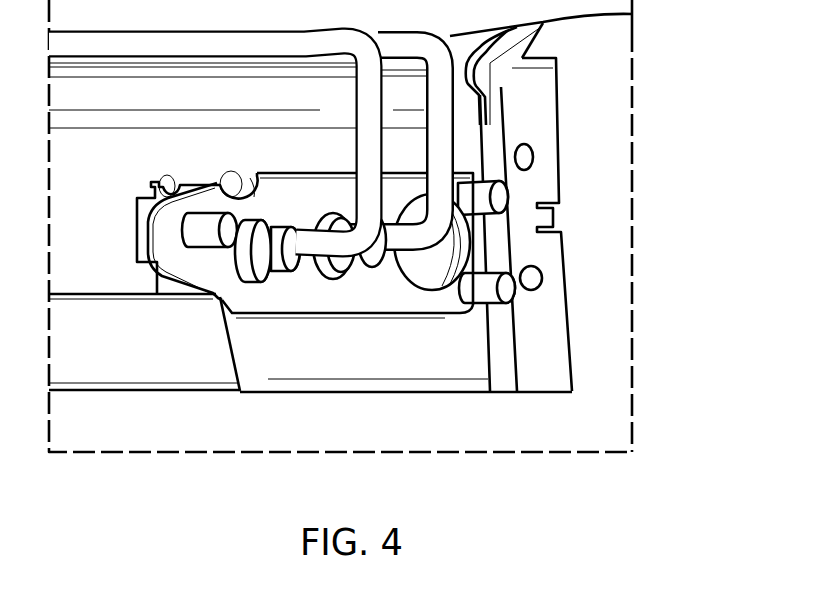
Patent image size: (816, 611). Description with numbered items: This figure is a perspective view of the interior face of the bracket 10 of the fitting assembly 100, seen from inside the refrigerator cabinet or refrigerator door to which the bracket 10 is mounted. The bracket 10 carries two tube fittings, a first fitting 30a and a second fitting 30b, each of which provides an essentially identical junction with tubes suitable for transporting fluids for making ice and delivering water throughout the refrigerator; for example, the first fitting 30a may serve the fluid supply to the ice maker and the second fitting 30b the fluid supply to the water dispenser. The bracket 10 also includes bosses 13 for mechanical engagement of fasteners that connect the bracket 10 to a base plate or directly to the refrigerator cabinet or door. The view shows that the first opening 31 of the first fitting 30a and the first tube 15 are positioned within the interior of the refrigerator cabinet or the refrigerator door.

The fitting assembly 100 is at (614, 86).
The first tube 15 is at (447, 133).
The bosses 13 is at (193, 225).
The bracket 10 is at (273, 303).
The first fitting 30a is at (250, 264).
The second fitting 30b is at (358, 276).
The first opening 31 is at (327, 280).